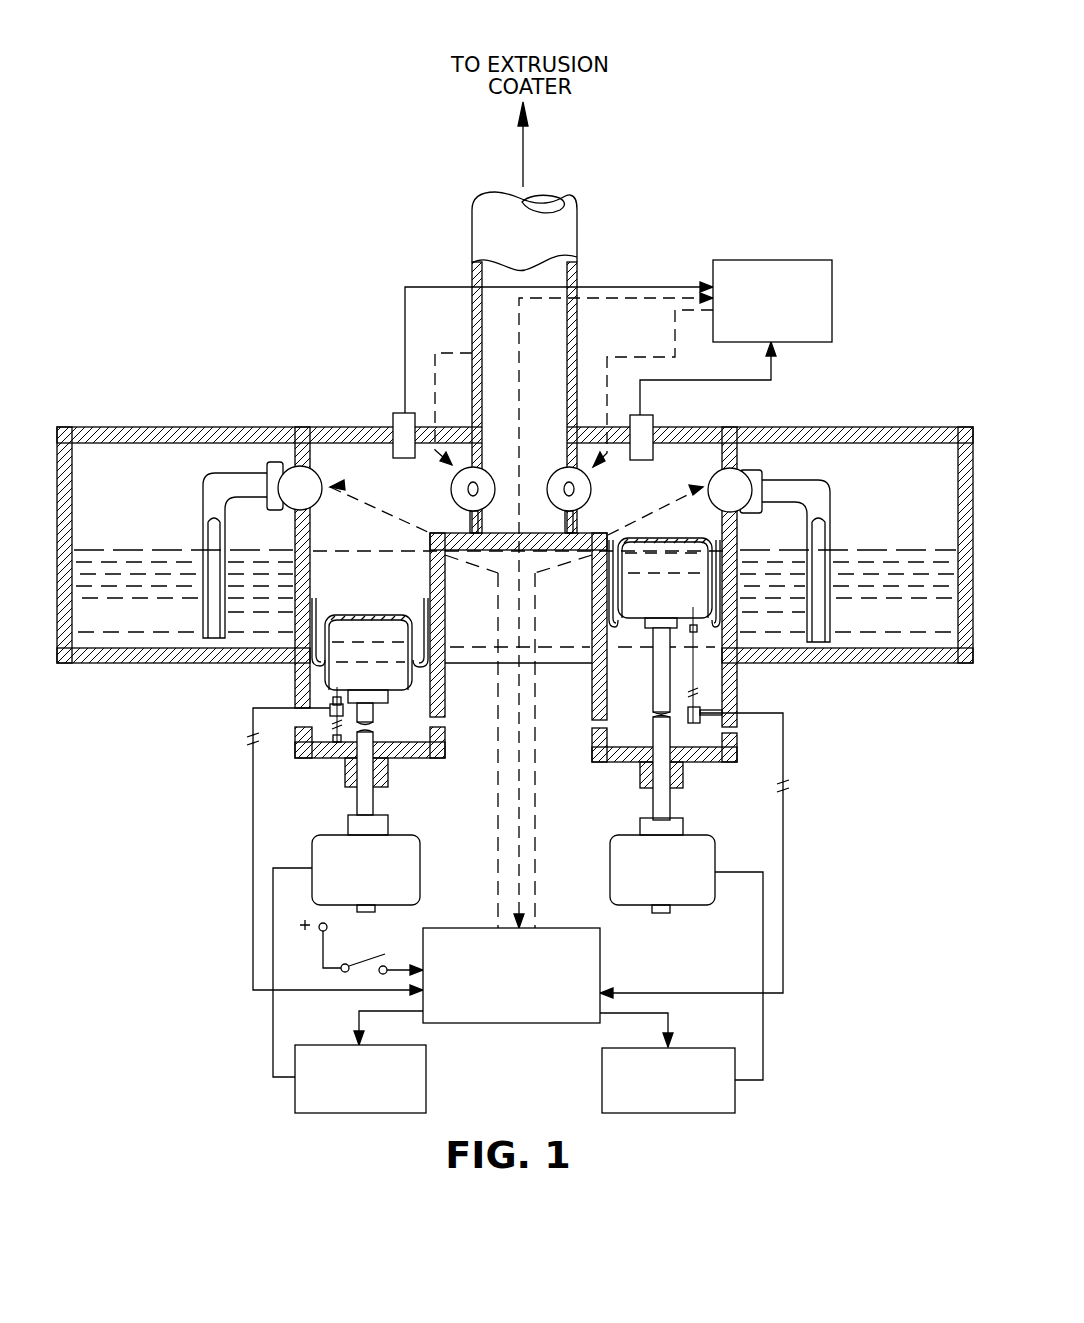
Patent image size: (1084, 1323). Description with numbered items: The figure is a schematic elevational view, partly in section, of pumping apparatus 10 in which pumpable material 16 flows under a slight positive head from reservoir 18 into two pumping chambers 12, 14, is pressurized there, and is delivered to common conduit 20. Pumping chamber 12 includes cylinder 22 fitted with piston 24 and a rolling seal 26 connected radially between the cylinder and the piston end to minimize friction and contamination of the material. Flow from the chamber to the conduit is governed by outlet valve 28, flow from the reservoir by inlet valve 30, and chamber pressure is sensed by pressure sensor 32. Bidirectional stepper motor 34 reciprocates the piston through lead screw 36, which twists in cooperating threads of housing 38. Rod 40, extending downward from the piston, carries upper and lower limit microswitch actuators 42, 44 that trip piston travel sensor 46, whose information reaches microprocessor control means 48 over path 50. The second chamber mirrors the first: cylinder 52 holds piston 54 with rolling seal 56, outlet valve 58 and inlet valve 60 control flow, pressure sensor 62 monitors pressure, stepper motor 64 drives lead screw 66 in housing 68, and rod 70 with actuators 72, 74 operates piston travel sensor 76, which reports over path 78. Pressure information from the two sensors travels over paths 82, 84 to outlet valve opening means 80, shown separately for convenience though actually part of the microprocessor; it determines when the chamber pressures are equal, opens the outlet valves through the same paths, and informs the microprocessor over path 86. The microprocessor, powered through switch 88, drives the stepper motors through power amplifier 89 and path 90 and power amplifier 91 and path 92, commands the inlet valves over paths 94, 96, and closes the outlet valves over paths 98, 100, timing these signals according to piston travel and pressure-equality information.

The pumping apparatus 10 is at (212, 345).
The pumping chamber 12 is at (353, 458).
The pumping chamber 14 is at (692, 455).
The pumpable material 16 is at (140, 648).
The reservoir 18 is at (145, 452).
The common conduit 20 is at (568, 226).
The cylinder 22 is at (357, 567).
The piston 24 is at (405, 630).
The rolling seal 26 is at (440, 676).
The outlet valve 28 is at (450, 490).
The inlet valve 30 is at (282, 468).
The pressure sensor 32 is at (400, 414).
The bidirectional stepper motor 34 is at (415, 840).
The lead screw 36 is at (372, 772).
The housing 38 is at (347, 776).
The rod 40 is at (330, 733).
The upper limit microswitch actuator 42 is at (325, 752).
The lower limit microswitch actuator 44 is at (320, 700).
The piston travel sensor 46 is at (325, 716).
The microprocessor control means 48 is at (458, 1024).
The path 50 is at (248, 893).
The cylinder 52 is at (718, 565).
The piston 54 is at (640, 578).
The rolling seal 56 is at (605, 620).
The outlet valve 58 is at (595, 490).
The inlet valve 60 is at (750, 480).
The pressure sensor 62 is at (650, 432).
The bidirectional stepper motor 64 is at (613, 840).
The lead screw 66 is at (667, 806).
The housing 68 is at (682, 778).
The rod 70 is at (665, 673).
The upper limit microswitch actuator 72 is at (727, 738).
The lower limit microswitch actuator 74 is at (735, 680).
The piston travel sensor 76 is at (698, 703).
The path 78 is at (785, 918).
The outlet valve opening means 80 is at (795, 262).
The path 82 is at (637, 287).
The path 84 is at (708, 386).
The path 86 is at (523, 372).
The switch 88 is at (358, 943).
The power amplifier 89 is at (428, 1102).
The path 90 is at (275, 1035).
The power amplifier 91 is at (603, 1102).
The path 92 is at (763, 1025).
The path 94 is at (372, 514).
The path 96 is at (625, 526).
The path 98 is at (498, 503).
The path 100 is at (540, 505).